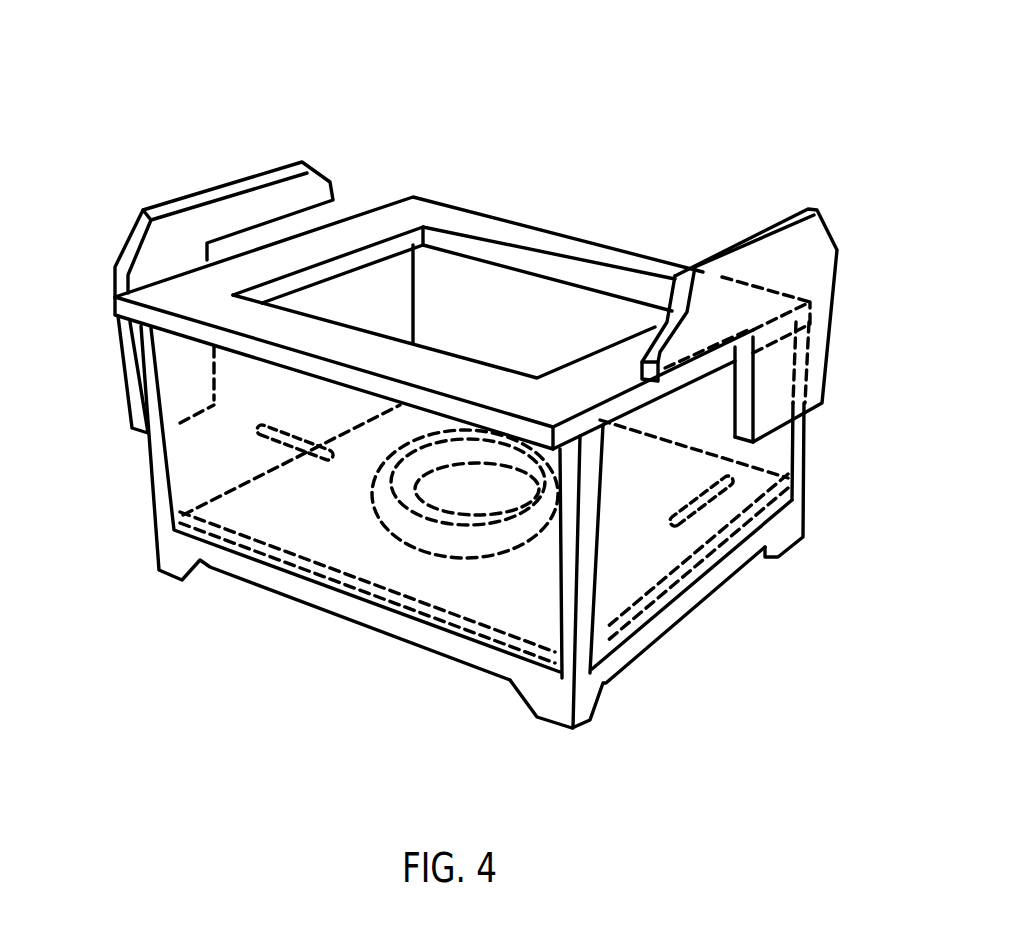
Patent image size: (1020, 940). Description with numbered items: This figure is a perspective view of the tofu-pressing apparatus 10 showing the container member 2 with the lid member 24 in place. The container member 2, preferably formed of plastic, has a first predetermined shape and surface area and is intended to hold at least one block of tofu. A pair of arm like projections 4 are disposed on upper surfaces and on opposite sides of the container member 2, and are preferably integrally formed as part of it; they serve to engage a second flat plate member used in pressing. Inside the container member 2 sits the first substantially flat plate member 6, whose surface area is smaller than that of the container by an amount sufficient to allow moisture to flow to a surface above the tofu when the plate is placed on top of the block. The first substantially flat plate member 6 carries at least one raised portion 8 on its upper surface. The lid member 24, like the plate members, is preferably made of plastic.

The apparatus 10 is at (632, 78).
The lid member 24 is at (612, 260).
The arm like projections 4 is at (200, 195).
The container member 2 is at (170, 482).
The first substantially flat plate member 6 is at (660, 557).
The raised portion 8 is at (420, 530).